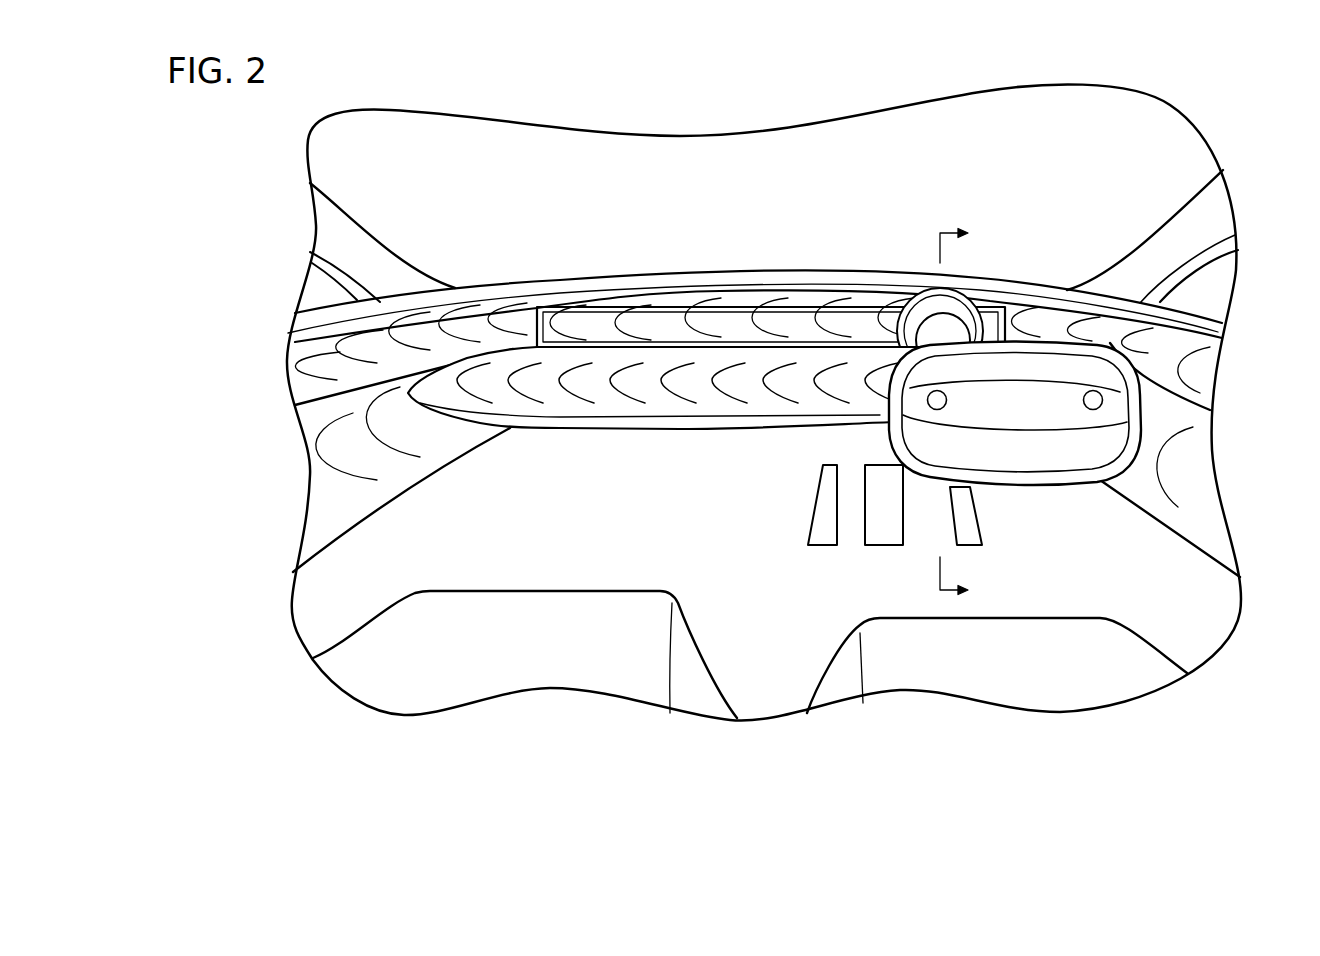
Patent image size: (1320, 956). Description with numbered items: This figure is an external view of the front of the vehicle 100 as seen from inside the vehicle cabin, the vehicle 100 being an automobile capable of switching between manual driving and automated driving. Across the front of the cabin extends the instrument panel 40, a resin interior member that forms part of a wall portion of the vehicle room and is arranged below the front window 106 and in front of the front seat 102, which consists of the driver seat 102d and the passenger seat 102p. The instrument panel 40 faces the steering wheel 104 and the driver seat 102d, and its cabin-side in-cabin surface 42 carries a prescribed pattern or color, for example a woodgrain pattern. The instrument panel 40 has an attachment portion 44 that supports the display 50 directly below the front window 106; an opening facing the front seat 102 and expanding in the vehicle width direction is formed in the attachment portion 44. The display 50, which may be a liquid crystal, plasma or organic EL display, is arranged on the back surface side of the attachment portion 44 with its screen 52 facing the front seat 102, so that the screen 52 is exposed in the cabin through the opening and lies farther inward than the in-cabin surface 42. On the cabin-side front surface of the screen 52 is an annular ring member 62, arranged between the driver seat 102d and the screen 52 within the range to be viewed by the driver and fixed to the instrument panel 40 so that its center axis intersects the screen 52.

The vehicle 100 is at (166, 157).
The front window 106 is at (1160, 127).
The instrument panel 40 is at (466, 305).
The in-cabin surface 42 is at (519, 313).
The attachment portion 44 is at (590, 305).
The display 50 is at (652, 305).
The screen 52 is at (718, 330).
The ring member 62 is at (928, 292).
The steering wheel 104 is at (1053, 487).
The front seat 102 is at (838, 777).
The passenger seat 102p is at (700, 693).
The driver seat 102d is at (838, 697).